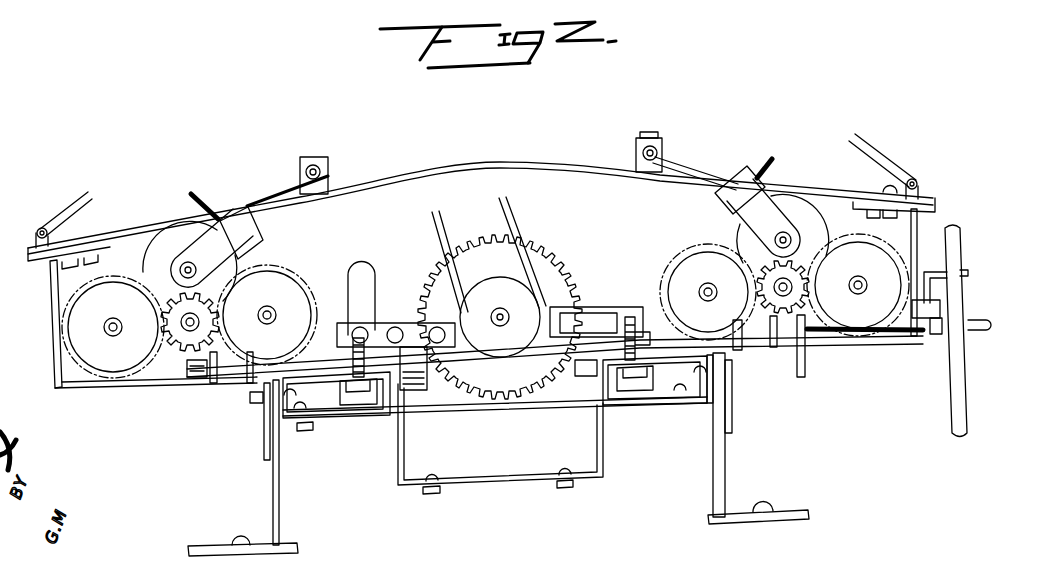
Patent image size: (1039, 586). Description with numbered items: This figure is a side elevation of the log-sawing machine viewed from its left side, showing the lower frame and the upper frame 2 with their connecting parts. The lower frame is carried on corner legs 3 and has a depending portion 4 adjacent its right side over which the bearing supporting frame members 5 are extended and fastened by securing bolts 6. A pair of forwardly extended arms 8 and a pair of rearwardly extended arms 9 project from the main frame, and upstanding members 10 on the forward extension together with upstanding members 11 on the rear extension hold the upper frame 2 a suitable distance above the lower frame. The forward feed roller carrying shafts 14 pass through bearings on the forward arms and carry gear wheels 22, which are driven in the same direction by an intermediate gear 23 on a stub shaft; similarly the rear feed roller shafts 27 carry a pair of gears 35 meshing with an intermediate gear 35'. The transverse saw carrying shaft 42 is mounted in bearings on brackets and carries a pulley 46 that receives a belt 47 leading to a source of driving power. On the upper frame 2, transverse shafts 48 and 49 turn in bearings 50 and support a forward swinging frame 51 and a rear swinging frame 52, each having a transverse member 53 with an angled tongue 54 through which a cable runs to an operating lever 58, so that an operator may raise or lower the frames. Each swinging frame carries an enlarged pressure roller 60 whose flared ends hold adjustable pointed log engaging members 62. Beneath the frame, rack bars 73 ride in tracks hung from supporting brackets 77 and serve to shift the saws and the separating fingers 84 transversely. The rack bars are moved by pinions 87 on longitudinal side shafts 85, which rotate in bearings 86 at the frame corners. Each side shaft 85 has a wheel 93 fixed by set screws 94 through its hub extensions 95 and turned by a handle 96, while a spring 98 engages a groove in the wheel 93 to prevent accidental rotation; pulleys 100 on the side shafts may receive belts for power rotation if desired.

The upper frame 2 is at (858, 188).
The corner legs 3 is at (282, 490).
The depending portion 4 is at (606, 450).
The bearing supporting frame members 5 is at (553, 362).
The securing bolts 6 is at (585, 364).
The forwardly extended arms 8 is at (862, 346).
The rearwardly extended arms 9 is at (176, 388).
The upstanding members 10 is at (914, 228).
The upstanding members 11 is at (52, 290).
The forward feed roller carrying shafts 14 is at (712, 300).
The gear wheels 22 is at (686, 262).
The intermediate gear 23 is at (786, 348).
The rear feed roller shafts 27 is at (111, 336).
The gears 35 is at (189, 321).
The intermediate gear 35' is at (164, 362).
The saw carrying shaft 42 is at (510, 315).
The pulley 46 is at (487, 292).
The belt 47 is at (512, 236).
The transverse shaft 48 is at (652, 140).
The transverse shaft 49 is at (318, 166).
The bearings 50 is at (333, 173).
The forward swinging frame 51 is at (690, 176).
The rear swinging frame 52 is at (247, 197).
The transverse member 53 is at (240, 212).
The tongue 54 is at (200, 198).
The operating lever 58 is at (66, 208).
The pressure roller 60 is at (168, 252).
The pointed log engaging members 62 is at (145, 272).
The rack bars 73 is at (365, 388).
The supporting brackets 77 is at (386, 412).
The separating fingers 84 is at (376, 297).
The longitudinal side shafts 85 is at (470, 356).
The bearings 86 is at (240, 378).
The pinions 87 is at (368, 345).
The wheel 93 is at (962, 391).
The set screws 94 is at (930, 322).
The hub extensions 95 is at (940, 336).
The handle 96 is at (975, 322).
The spring 98 is at (946, 282).
The pulleys 100 is at (446, 372).